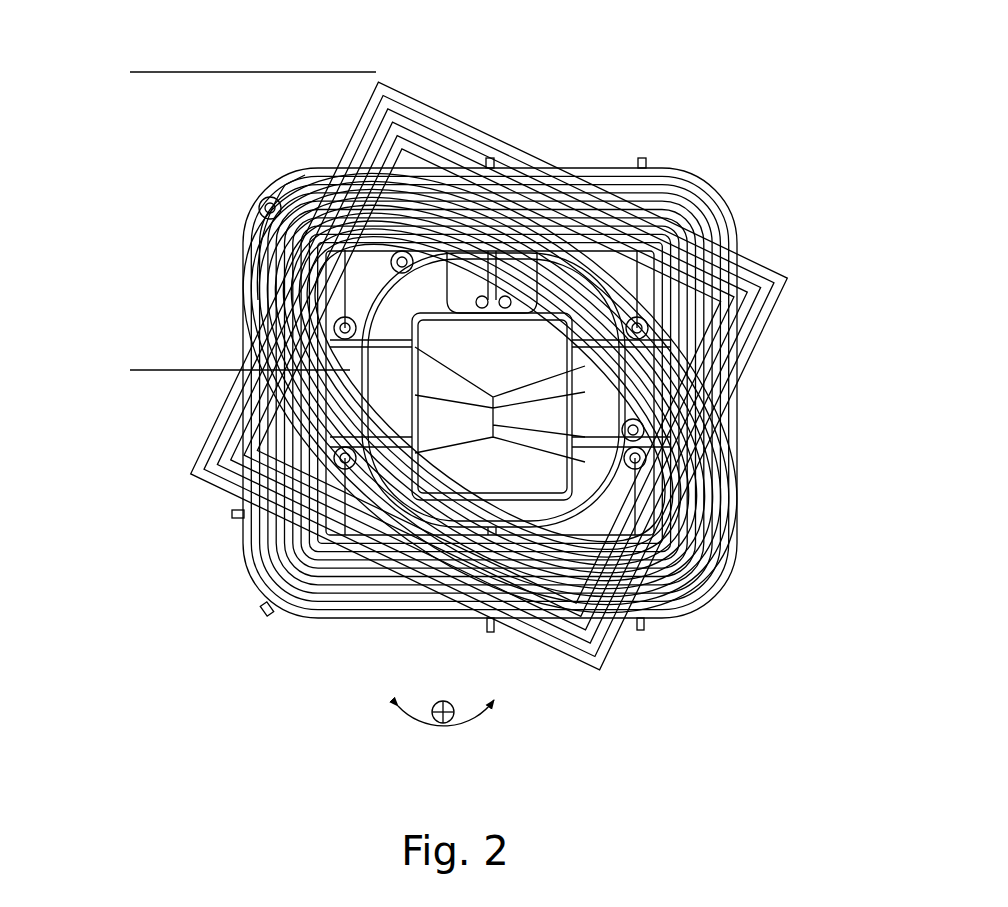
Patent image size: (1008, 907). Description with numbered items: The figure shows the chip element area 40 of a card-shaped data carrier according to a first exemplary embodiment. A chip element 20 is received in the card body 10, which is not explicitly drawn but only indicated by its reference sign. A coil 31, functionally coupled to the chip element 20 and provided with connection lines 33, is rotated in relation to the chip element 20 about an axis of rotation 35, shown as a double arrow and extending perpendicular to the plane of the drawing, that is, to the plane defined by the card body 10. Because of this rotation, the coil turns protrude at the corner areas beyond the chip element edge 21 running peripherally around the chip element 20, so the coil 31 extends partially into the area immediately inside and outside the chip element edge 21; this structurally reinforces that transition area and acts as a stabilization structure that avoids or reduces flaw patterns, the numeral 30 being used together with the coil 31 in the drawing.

The card body 10 is at (562, 82).
The chip element 20 is at (714, 166).
The chip element edge 21 is at (604, 164).
The second coil 30 is at (490, 393).
The coil 31 is at (190, 480).
The connection lines 33 is at (192, 68).
The axis of rotation 35 is at (494, 738).
The chip element area 40 is at (694, 64).